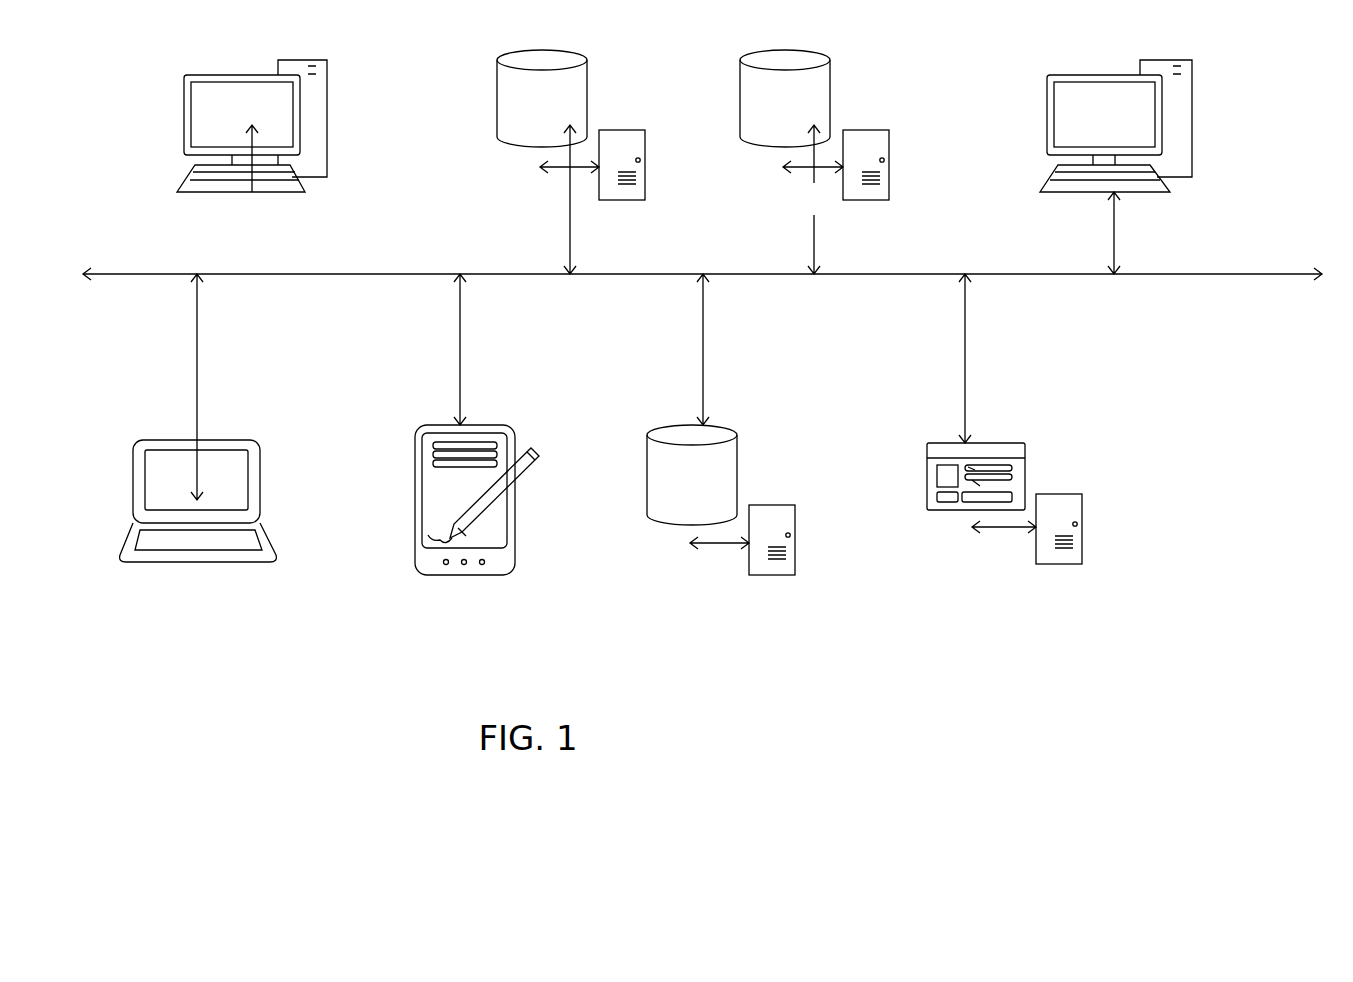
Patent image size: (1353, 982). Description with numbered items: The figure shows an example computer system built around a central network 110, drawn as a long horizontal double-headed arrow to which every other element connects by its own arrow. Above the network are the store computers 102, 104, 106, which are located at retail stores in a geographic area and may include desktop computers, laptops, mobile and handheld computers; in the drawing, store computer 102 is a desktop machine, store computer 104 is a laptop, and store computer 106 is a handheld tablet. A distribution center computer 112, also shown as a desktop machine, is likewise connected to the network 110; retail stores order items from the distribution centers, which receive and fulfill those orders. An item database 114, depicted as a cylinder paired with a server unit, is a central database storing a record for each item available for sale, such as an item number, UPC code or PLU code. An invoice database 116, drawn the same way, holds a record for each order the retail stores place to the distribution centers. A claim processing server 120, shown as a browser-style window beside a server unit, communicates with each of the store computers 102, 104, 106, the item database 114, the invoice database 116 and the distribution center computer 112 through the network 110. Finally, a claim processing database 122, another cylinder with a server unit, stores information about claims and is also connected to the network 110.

The store computer 102 is at (239, 266).
The store computer 104 is at (198, 443).
The store computer 106 is at (477, 443).
The network 110 is at (702, 296).
The distribution center computer 112 is at (1116, 167).
The item database 114 is at (571, 162).
The invoice database 116 is at (814, 162).
The claim processing server 120 is at (1004, 443).
The claim processing database 122 is at (721, 443).